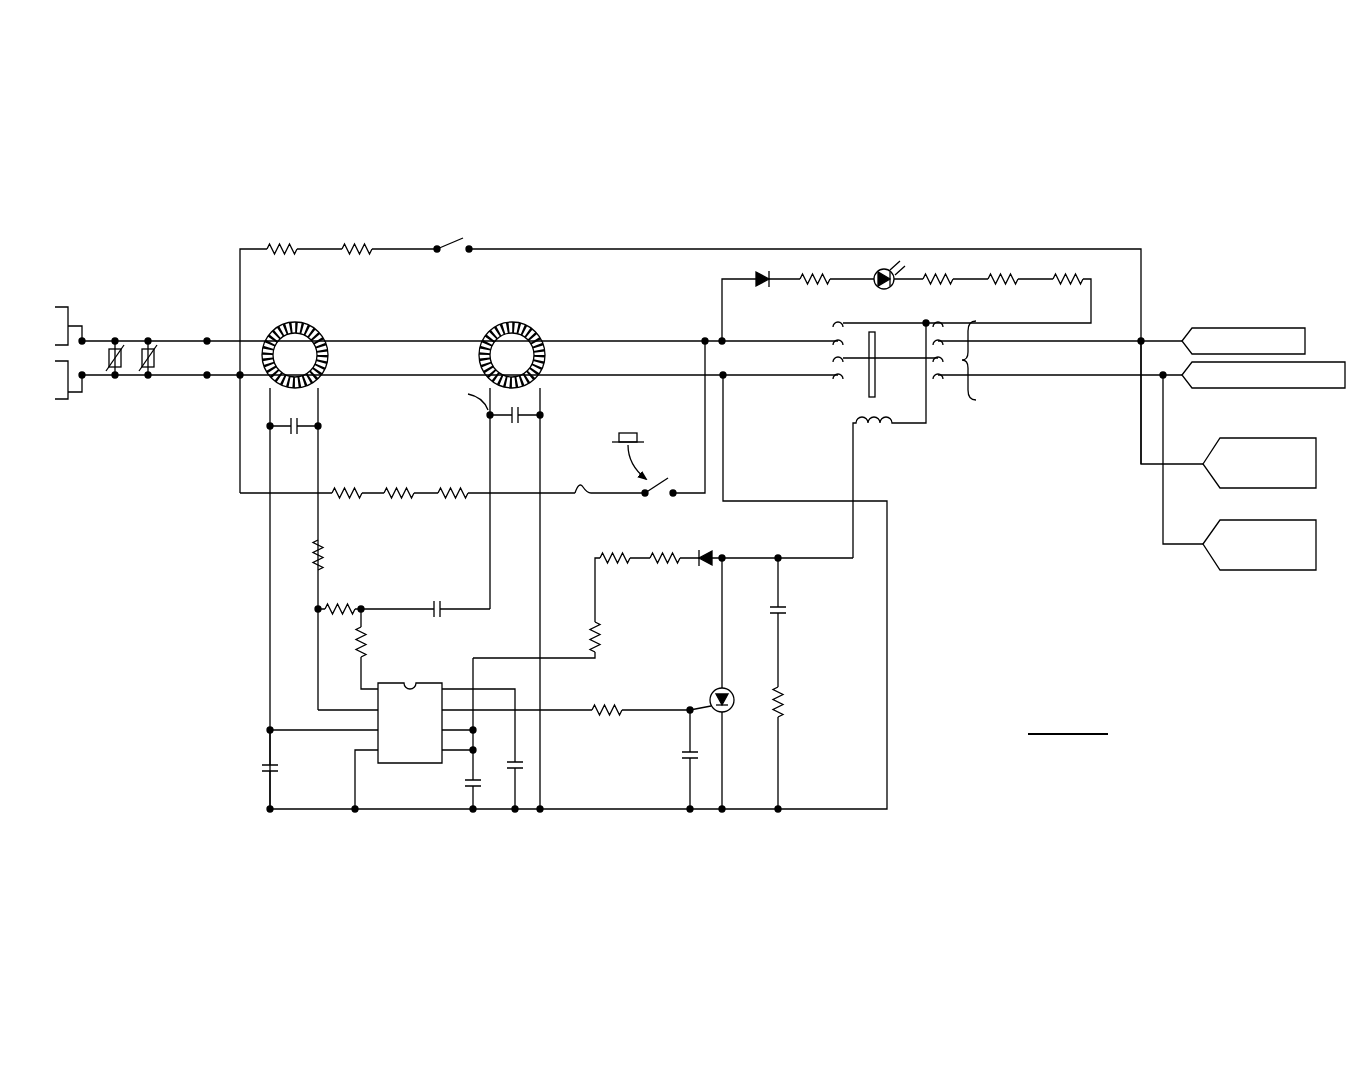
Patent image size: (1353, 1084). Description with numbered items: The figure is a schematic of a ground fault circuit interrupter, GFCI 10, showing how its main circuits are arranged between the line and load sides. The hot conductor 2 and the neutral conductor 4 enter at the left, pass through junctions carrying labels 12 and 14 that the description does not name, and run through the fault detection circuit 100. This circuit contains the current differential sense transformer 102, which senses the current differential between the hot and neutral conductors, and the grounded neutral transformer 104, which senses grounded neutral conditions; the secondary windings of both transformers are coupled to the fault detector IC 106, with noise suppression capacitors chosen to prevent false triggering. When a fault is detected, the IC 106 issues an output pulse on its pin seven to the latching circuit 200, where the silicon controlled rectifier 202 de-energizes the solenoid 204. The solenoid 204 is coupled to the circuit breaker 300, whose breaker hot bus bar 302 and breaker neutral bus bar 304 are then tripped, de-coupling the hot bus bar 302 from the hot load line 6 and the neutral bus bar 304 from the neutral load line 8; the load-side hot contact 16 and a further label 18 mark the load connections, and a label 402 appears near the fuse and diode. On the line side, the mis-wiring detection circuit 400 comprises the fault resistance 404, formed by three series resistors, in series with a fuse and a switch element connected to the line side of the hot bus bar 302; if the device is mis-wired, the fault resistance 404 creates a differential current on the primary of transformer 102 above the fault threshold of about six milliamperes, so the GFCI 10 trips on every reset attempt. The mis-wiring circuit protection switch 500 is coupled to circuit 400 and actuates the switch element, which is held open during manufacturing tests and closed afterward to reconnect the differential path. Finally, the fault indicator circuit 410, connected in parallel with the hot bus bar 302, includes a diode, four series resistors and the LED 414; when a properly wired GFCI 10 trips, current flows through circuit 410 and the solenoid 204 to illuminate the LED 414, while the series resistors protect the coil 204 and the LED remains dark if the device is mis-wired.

The hot conductor 2 is at (90, 340).
The neutral conductor 4 is at (86, 396).
The hot load line 6 is at (1172, 338).
The neutral load line 8 is at (1141, 395).
The GFCI 10 is at (1022, 172).
The hot conductor junction J2 12 is at (207, 339).
The neutral conductor junction J1 14 is at (207, 378).
The hot contact 16 is at (1137, 336).
The load neutral junction 18 is at (1169, 380).
The fault detection circuit 100 is at (256, 584).
The current differential sense transformer 102 is at (314, 325).
The grounded neutral transformer 104 is at (510, 322).
The fault detector IC 106 is at (390, 692).
The latching circuit 200 is at (733, 822).
The silicon controlled rectifier 202 is at (711, 688).
The solenoid 204 is at (881, 440).
The circuit breaker 300 is at (968, 362).
The breaker hot bus bar 302 is at (846, 314).
The breaker neutral bus bar 304 is at (881, 370).
The mis-wiring detection circuit 400 is at (430, 507).
The fuse / diode element 402 is at (578, 496).
The fault resistance 404 is at (460, 462).
The fault indicator circuit 410 is at (965, 273).
The LED 414 is at (898, 262).
The mis-wiring circuit protection switch 500 is at (628, 431).